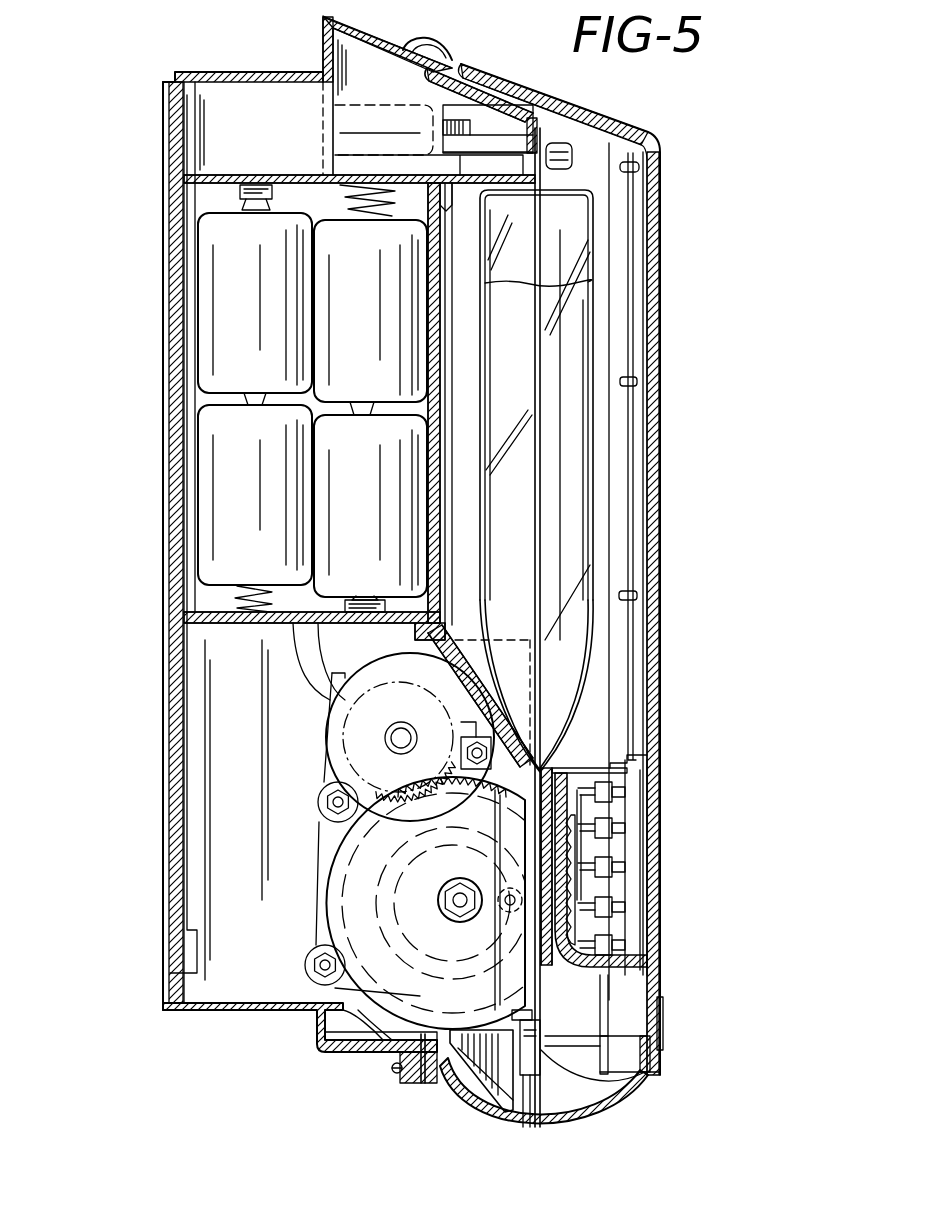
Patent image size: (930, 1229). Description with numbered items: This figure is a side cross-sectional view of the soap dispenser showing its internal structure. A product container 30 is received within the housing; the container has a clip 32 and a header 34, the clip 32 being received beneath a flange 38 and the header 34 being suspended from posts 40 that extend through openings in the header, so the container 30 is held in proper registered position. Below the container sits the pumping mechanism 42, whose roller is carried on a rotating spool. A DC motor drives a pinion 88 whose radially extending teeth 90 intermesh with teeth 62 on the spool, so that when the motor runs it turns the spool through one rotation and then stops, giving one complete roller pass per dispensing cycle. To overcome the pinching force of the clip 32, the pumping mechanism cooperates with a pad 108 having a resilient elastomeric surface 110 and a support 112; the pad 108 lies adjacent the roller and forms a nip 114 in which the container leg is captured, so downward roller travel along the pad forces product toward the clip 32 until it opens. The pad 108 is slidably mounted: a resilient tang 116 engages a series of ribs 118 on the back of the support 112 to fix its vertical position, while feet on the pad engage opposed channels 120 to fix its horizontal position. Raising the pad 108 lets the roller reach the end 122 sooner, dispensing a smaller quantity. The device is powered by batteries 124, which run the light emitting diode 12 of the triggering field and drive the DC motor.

The light emitting diode (LED) 12 is at (397, 1069).
The product container 30 is at (598, 534).
The clip 32 is at (545, 1055).
The header 34 is at (533, 181).
The flange 38 is at (520, 1025).
The posts 40 is at (563, 157).
The pumping mechanism 42 is at (318, 915).
The teeth 62 is at (360, 821).
The pinion 88 is at (367, 757).
The teeth 90 is at (322, 802).
The pad 108 is at (554, 945).
The resilient elastomeric surface 110 is at (552, 791).
The support 112 is at (556, 808).
The nip 114 is at (600, 907).
The resilient tang 116 is at (574, 860).
The ribs 118 is at (577, 823).
The channels 120 is at (612, 942).
The end 122 is at (528, 984).
The batteries 124 is at (214, 540).